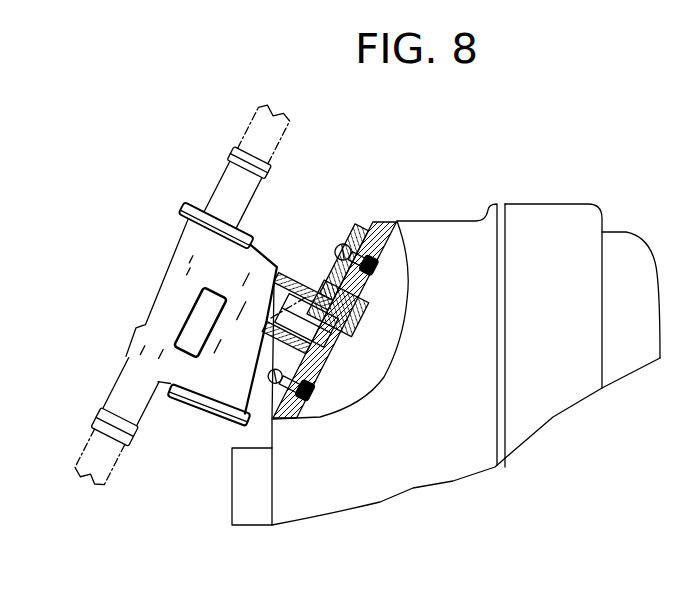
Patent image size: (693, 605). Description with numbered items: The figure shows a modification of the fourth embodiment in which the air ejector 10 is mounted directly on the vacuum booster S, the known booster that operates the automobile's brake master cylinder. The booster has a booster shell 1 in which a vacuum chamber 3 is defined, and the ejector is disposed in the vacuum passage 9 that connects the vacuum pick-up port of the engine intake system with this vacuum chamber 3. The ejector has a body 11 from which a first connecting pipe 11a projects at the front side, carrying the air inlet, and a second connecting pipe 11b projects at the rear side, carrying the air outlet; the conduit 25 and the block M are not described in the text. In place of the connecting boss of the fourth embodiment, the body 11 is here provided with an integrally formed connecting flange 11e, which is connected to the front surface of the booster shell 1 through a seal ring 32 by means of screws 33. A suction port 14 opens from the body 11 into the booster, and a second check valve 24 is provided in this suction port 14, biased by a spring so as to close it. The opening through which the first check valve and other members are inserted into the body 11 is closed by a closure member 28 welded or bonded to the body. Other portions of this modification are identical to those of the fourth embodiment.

The booster shell 1 is at (449, 226).
The vacuum chamber 3 is at (390, 308).
The vacuum passage 9 is at (106, 473).
The air ejector 10 is at (164, 245).
The body 11 is at (165, 303).
The first connecting pipe 11a is at (228, 187).
The second connecting pipe 11b is at (120, 397).
The connecting flange 11e is at (352, 238).
The suction port 14 is at (349, 326).
The second check valve 24 is at (300, 284).
The conduit 25 is at (260, 120).
The closure member 28 is at (205, 411).
The seal ring 32 is at (316, 361).
The screws 33 is at (344, 248).
The vacuum booster S is at (555, 196).
The mount M is at (232, 506).